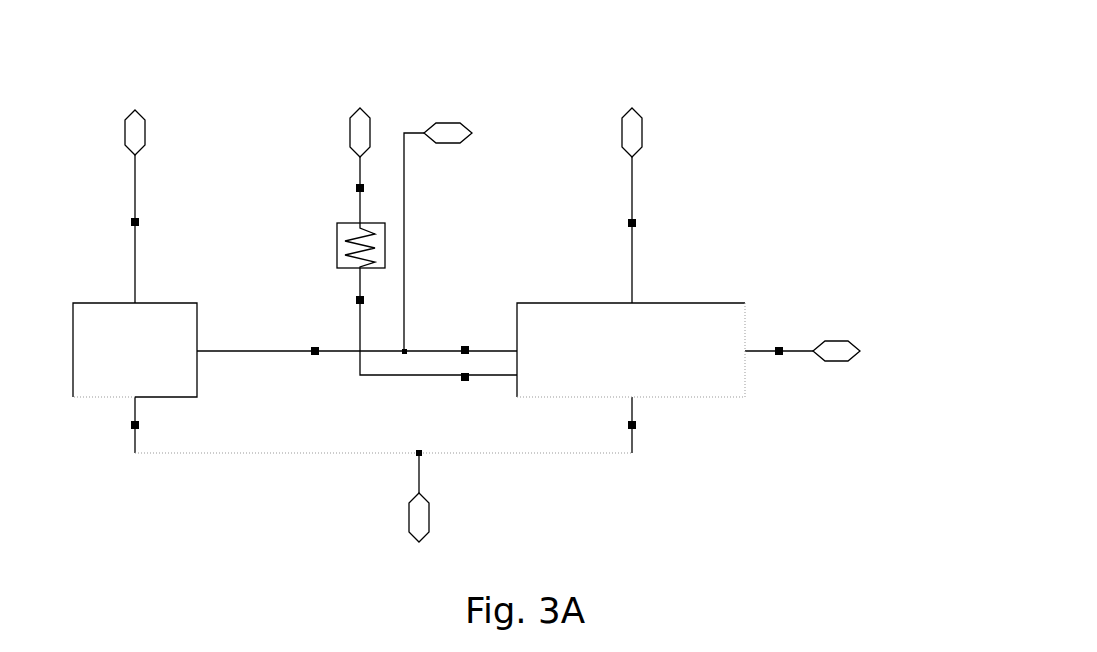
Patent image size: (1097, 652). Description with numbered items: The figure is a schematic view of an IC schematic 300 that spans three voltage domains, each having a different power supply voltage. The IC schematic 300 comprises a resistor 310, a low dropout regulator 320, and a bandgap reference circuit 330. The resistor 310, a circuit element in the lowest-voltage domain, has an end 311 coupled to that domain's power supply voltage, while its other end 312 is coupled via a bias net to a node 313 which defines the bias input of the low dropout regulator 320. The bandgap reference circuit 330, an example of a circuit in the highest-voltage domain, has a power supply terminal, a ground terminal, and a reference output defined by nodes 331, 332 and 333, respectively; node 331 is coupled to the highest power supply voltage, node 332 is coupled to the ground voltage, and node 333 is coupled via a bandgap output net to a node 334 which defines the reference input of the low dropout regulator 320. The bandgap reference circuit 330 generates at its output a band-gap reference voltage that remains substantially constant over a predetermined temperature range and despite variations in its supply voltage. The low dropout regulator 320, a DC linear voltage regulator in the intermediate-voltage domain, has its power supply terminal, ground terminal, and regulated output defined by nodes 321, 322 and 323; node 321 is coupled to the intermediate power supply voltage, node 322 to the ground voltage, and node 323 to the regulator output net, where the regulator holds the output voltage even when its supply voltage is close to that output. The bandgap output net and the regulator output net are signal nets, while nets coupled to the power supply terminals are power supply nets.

The IC schematic 300 is at (130, 50).
The resistor 310 is at (337, 244).
The end of resistor 311 is at (359, 188).
The another end of resistor 312 is at (359, 300).
The node 313 is at (464, 382).
The low dropout regulator 320 is at (562, 303).
The node 321 is at (636, 224).
The node 322 is at (636, 427).
The node 323 is at (781, 348).
The bandgap reference circuit 330 is at (99, 303).
The node 331 is at (135, 222).
The node 332 is at (135, 425).
The node 333 is at (315, 351).
The node 334 is at (463, 348).